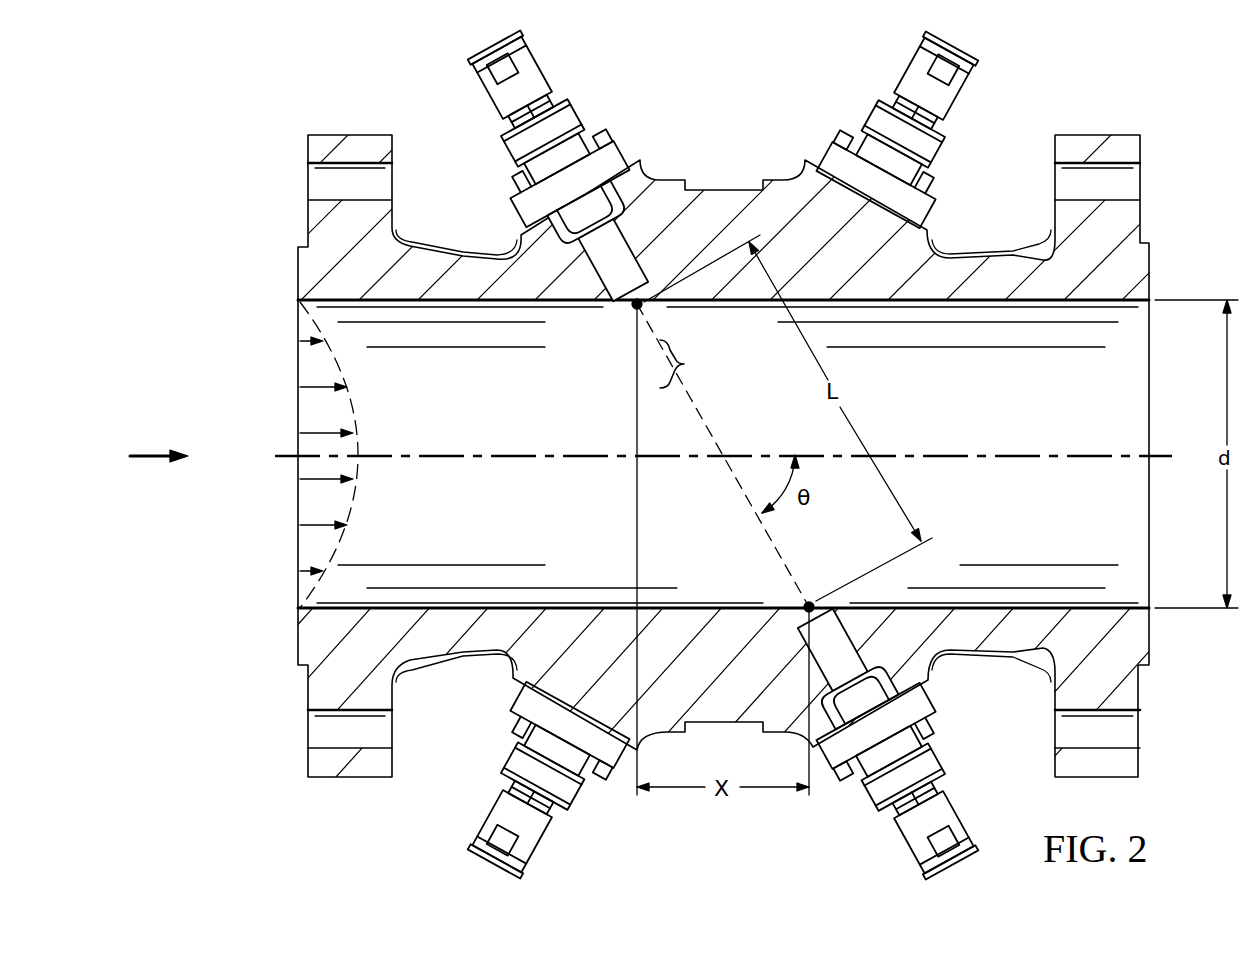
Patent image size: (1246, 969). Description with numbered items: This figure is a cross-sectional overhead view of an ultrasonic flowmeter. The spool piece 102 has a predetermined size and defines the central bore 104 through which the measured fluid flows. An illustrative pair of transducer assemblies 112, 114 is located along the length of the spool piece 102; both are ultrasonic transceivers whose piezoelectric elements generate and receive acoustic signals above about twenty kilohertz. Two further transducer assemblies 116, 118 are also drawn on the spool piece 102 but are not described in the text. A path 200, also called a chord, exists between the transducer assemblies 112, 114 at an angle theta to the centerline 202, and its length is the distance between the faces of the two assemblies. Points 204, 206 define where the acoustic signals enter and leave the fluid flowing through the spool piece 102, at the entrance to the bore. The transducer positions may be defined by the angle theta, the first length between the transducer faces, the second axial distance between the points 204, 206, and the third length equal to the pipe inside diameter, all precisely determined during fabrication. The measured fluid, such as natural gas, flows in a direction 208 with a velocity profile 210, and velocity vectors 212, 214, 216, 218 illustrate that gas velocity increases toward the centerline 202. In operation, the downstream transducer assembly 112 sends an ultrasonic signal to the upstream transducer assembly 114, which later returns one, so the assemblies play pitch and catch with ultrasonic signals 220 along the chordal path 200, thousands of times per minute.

The spool piece 102 is at (726, 190).
The central bore 104 is at (990, 406).
The transducer assembly 112 is at (915, 842).
The transducer assembly 114 is at (578, 128).
The ultrasonic transducer 116 is at (535, 842).
The ultrasonic transducer 118 is at (918, 68).
The path 200 is at (768, 548).
The centerline 202 is at (1005, 462).
The point 204 is at (815, 602).
The point 206 is at (632, 311).
The direction 208 is at (160, 452).
The velocity profile 210 is at (360, 408).
The velocity vector 212 is at (300, 382).
The velocity vector 214 is at (300, 430).
The velocity vector 216 is at (300, 482).
The velocity vector 218 is at (300, 529).
The ultrasonic signals 220 is at (684, 355).